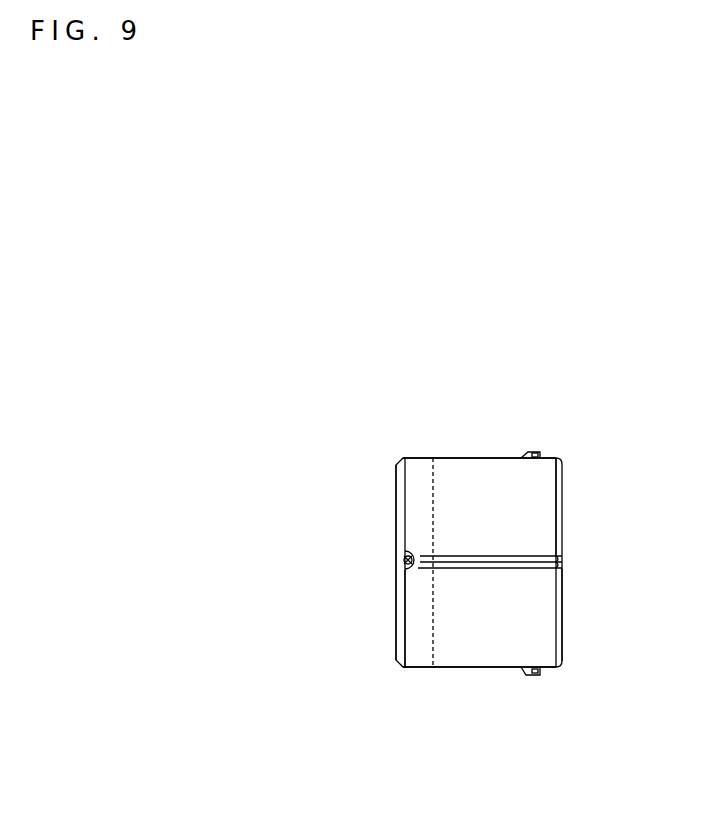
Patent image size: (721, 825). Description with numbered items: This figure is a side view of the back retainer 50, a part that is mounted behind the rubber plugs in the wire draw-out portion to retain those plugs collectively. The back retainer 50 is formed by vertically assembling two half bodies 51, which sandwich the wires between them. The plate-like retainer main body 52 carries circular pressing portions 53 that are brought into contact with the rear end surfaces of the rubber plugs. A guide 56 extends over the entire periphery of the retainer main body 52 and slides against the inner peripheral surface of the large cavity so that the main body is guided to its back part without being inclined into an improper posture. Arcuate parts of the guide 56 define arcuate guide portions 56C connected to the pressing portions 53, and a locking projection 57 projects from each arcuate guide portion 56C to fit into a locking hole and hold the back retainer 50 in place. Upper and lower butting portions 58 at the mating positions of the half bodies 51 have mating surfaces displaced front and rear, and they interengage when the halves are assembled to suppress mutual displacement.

The back retainer 50 is at (577, 418).
The half bodies 51 is at (481, 438).
The retainer main body 52 is at (388, 487).
The pressing portions 53 is at (417, 610).
The guide 56 is at (571, 608).
The arcuate guide portions 56C is at (533, 513).
The locking projection 57 is at (532, 452).
The butting portions 58 is at (428, 548).